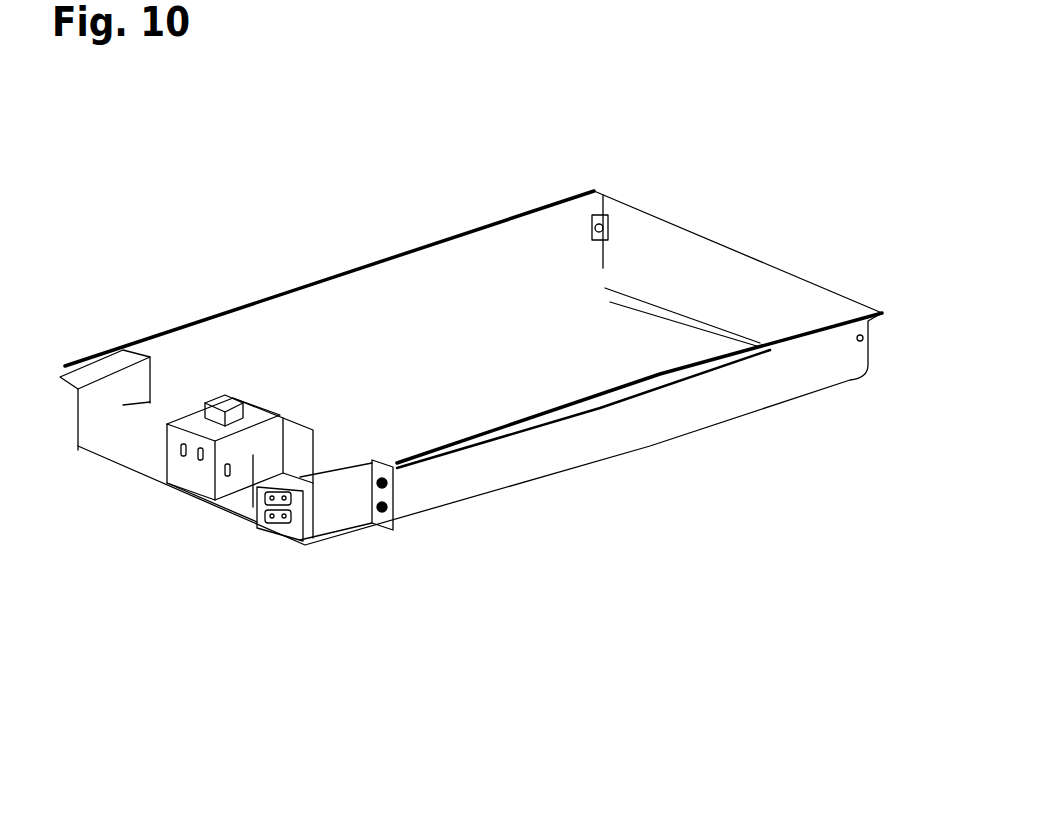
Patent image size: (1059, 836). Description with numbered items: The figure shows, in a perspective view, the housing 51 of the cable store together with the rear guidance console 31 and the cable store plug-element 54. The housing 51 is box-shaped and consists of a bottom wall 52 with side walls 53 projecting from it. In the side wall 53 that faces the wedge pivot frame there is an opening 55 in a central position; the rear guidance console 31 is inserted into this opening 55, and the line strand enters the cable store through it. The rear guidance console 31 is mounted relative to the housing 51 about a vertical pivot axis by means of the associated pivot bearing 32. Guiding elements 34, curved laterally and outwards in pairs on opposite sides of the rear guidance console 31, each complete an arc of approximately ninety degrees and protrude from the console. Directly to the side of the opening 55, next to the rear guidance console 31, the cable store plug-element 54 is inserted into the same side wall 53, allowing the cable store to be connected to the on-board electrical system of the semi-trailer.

The housing 51 is at (332, 253).
The bottom wall 52 is at (620, 361).
The side wall 53 is at (523, 242).
The cable store plug-element 54 is at (283, 527).
The opening 55 is at (240, 503).
The rear guidance console 31 is at (192, 480).
The pivot bearing 32 is at (233, 418).
The guiding element 34 is at (215, 412).